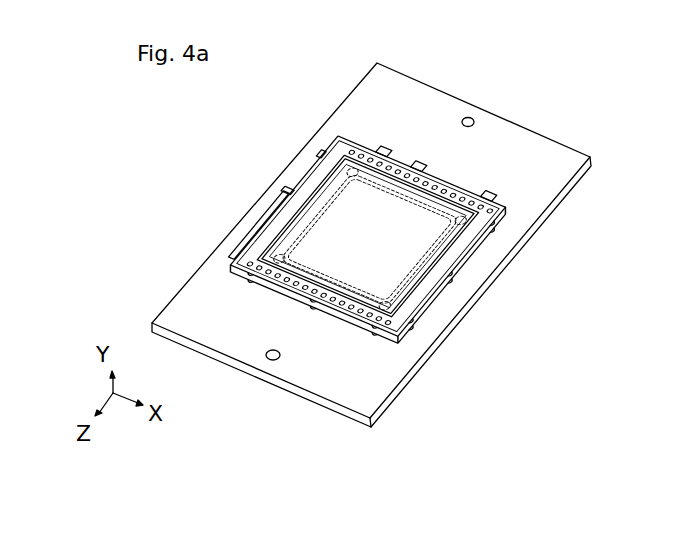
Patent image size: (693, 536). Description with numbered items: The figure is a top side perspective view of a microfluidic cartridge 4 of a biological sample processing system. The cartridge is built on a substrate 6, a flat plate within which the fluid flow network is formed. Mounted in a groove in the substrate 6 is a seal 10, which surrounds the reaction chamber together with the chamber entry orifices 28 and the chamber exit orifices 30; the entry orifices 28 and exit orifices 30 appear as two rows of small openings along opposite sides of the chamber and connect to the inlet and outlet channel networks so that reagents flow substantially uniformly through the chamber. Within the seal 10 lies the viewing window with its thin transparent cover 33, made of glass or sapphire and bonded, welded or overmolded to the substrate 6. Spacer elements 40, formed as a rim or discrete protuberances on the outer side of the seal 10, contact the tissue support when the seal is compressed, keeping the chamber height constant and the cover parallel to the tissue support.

The microfluidic cartridge 4 is at (535, 291).
The substrate 6 is at (528, 162).
The seal 10 is at (317, 160).
The chamber entry orifices 28 is at (350, 315).
The chamber exit orifices 30 is at (433, 187).
The transparent cover 33 is at (367, 228).
The spacer elements 40 is at (288, 197).